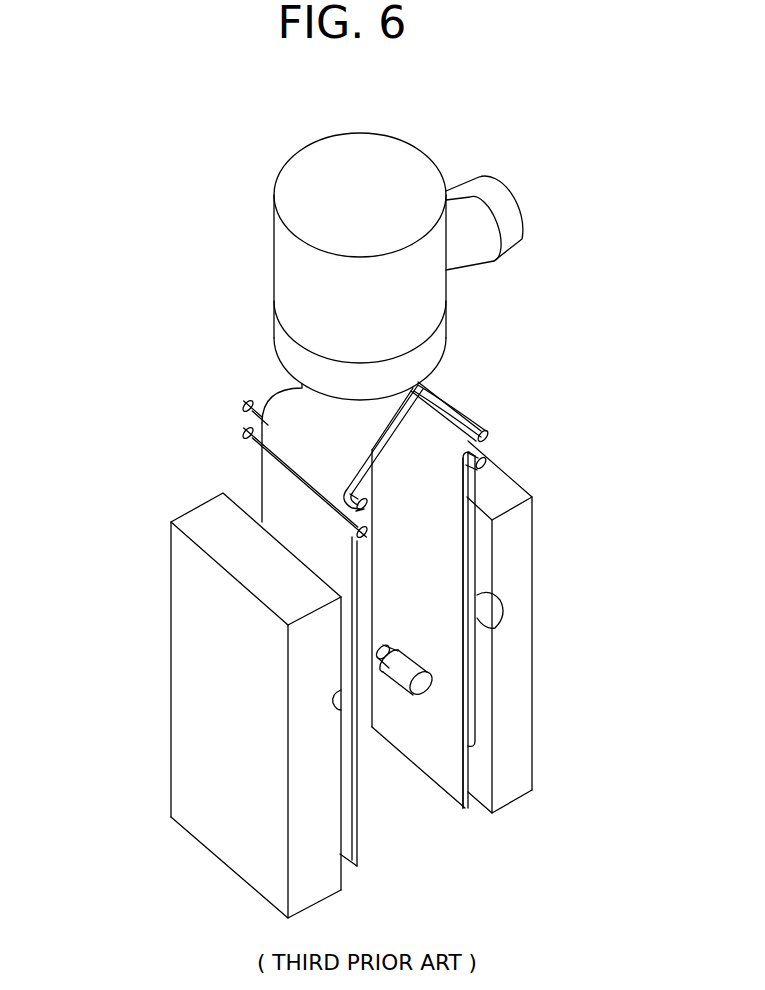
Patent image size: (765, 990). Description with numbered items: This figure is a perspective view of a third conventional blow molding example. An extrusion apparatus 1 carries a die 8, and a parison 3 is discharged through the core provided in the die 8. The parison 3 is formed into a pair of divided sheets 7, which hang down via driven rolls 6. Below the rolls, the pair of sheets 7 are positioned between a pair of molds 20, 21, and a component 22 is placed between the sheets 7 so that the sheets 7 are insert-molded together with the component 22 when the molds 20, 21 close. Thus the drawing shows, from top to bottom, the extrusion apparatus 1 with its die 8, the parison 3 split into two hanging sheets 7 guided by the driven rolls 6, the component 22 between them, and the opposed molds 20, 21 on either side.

The extrusion apparatus 1 is at (437, 148).
The parison 3 is at (302, 410).
The driven rolls 6 is at (247, 438).
The divided sheets 7 is at (272, 490).
The die 8 is at (435, 350).
The mold 20 is at (188, 578).
The mold 21 is at (513, 563).
The component 22 is at (415, 692).